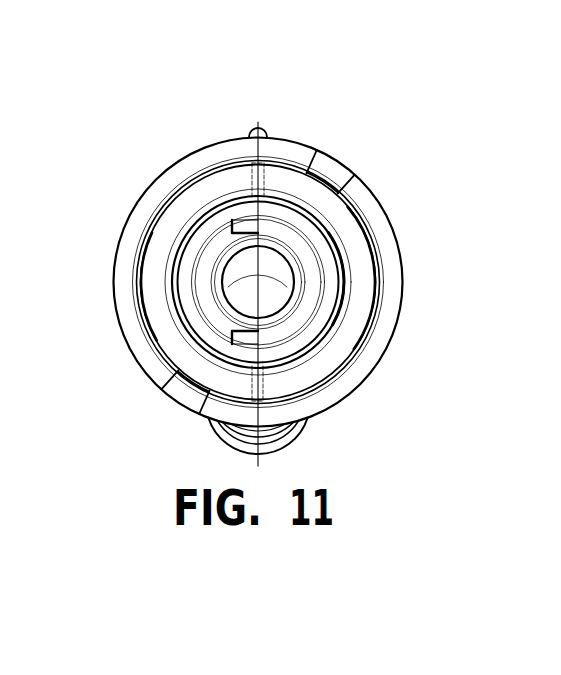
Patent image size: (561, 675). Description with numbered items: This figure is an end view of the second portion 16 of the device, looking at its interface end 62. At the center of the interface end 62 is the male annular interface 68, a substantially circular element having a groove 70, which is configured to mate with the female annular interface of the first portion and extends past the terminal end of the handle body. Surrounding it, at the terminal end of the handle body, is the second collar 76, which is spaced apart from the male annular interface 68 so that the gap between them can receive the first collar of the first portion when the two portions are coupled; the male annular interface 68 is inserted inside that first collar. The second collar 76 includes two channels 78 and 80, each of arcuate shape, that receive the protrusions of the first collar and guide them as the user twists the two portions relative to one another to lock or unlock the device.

The second portion 16 is at (308, 108).
The interface end 62 is at (420, 182).
The second collar 76 is at (145, 276).
The channel 78 is at (333, 170).
The channel 80 is at (188, 391).
The male annular interface 68 is at (347, 328).
The groove 70 is at (209, 302).